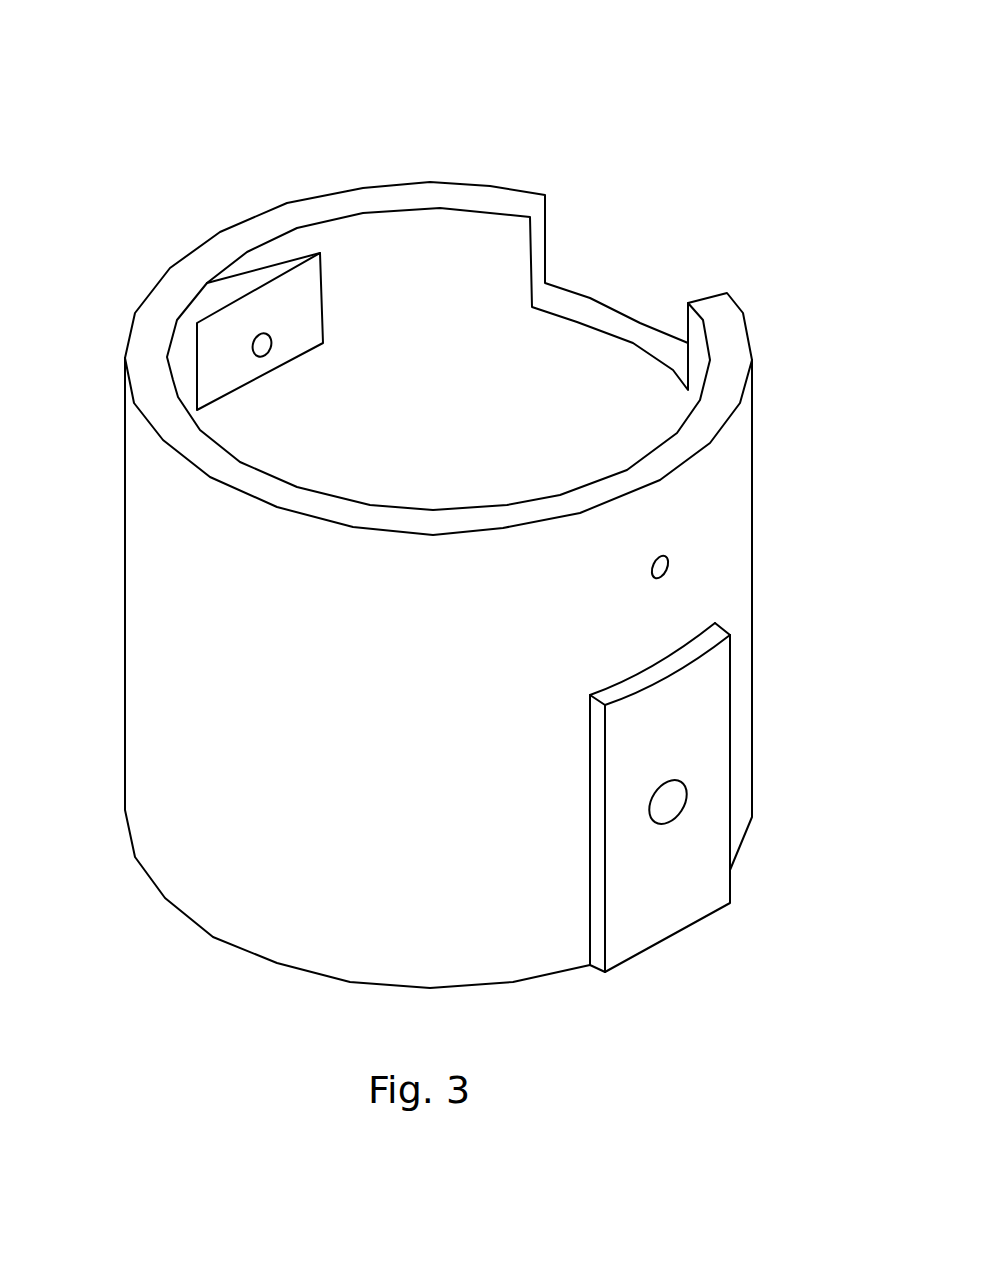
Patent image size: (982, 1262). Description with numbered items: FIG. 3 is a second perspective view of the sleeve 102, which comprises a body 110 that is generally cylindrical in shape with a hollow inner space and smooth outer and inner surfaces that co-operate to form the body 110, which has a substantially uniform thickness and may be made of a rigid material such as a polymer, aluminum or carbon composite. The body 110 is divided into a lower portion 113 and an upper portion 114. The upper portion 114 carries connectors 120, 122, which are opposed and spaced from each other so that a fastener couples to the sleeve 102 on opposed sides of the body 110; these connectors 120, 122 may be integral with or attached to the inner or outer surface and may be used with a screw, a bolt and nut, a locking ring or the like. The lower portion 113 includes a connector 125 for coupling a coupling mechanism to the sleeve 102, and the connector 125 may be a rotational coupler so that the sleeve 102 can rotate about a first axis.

The sleeve 102 is at (267, 170).
The body 110 is at (232, 247).
The lower portion 113 is at (523, 867).
The upper portion 114 is at (754, 395).
The connector 120 is at (266, 353).
The connector 122 is at (664, 569).
The connector 125 is at (679, 815).